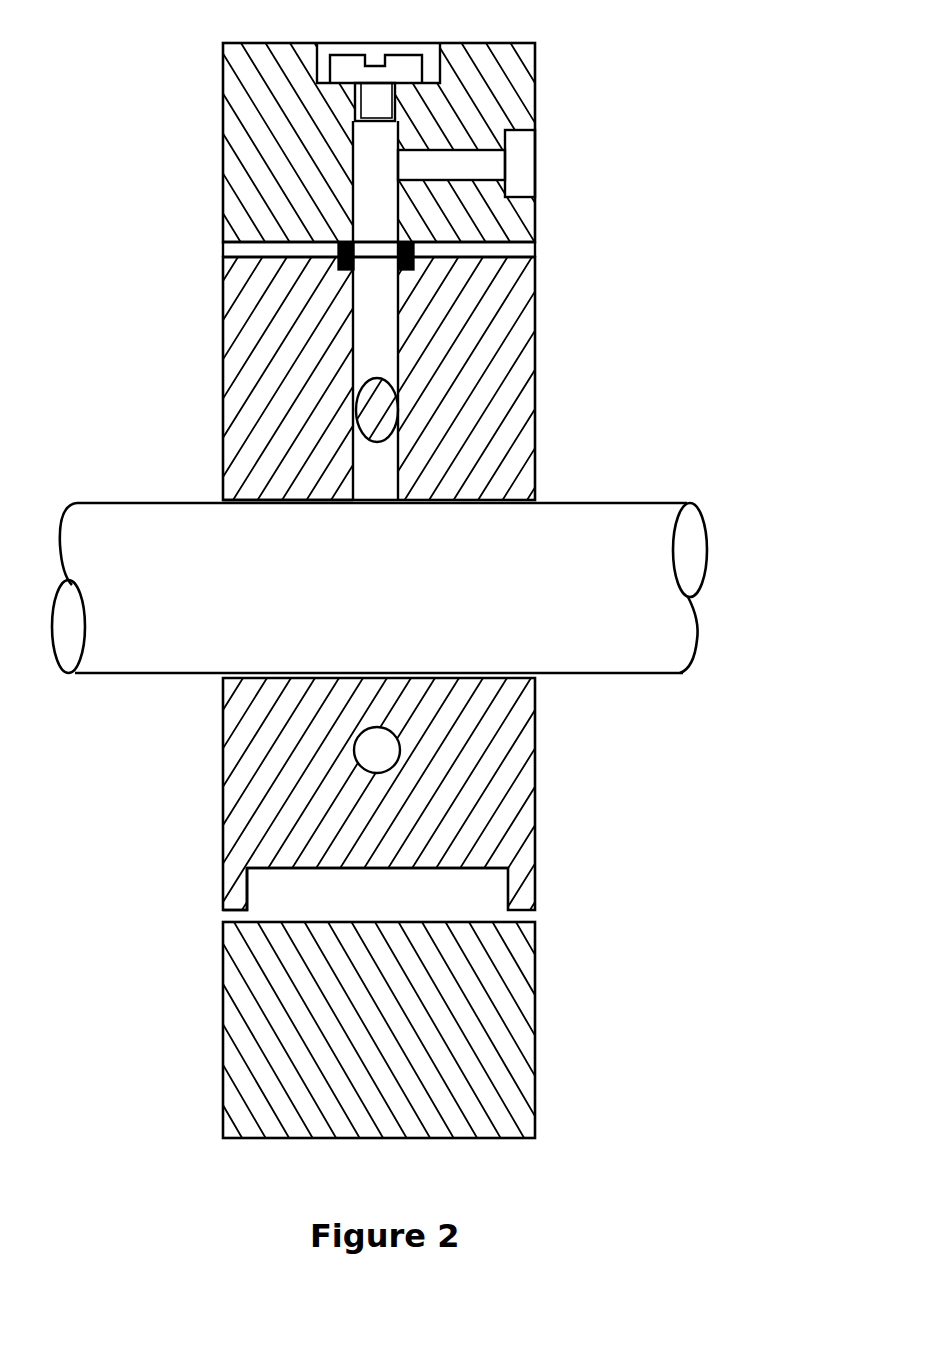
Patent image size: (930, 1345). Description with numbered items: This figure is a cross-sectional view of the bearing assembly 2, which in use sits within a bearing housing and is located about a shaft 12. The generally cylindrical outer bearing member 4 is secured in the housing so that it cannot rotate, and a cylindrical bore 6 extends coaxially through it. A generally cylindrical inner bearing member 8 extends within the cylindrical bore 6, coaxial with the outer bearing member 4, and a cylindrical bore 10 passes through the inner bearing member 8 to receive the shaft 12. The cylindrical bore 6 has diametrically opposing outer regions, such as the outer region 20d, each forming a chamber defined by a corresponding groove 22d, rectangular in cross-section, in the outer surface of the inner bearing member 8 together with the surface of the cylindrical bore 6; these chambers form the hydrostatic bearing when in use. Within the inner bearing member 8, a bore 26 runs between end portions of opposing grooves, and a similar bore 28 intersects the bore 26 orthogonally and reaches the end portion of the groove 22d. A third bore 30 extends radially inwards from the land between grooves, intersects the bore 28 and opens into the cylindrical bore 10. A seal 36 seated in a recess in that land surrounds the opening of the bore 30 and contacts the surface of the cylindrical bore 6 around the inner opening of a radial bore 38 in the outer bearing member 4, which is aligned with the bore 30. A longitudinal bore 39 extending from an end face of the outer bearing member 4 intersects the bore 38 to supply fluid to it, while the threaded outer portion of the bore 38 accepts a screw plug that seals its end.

The bearing assembly 2 is at (684, 180).
The outer bearing member 4 is at (503, 75).
The cylindrical bore 6 is at (483, 243).
The inner bearing member 8 is at (500, 397).
The cylindrical bore 10 is at (283, 503).
The shaft 12 is at (560, 540).
The outer region 20d is at (440, 897).
The groove 22d is at (283, 870).
The bore 26 is at (370, 748).
The bore 28 is at (357, 403).
The third bore 30 is at (357, 330).
The seal 36 is at (340, 244).
The cylindrical bore 38 is at (368, 138).
The cylindrical bore 39 is at (452, 180).